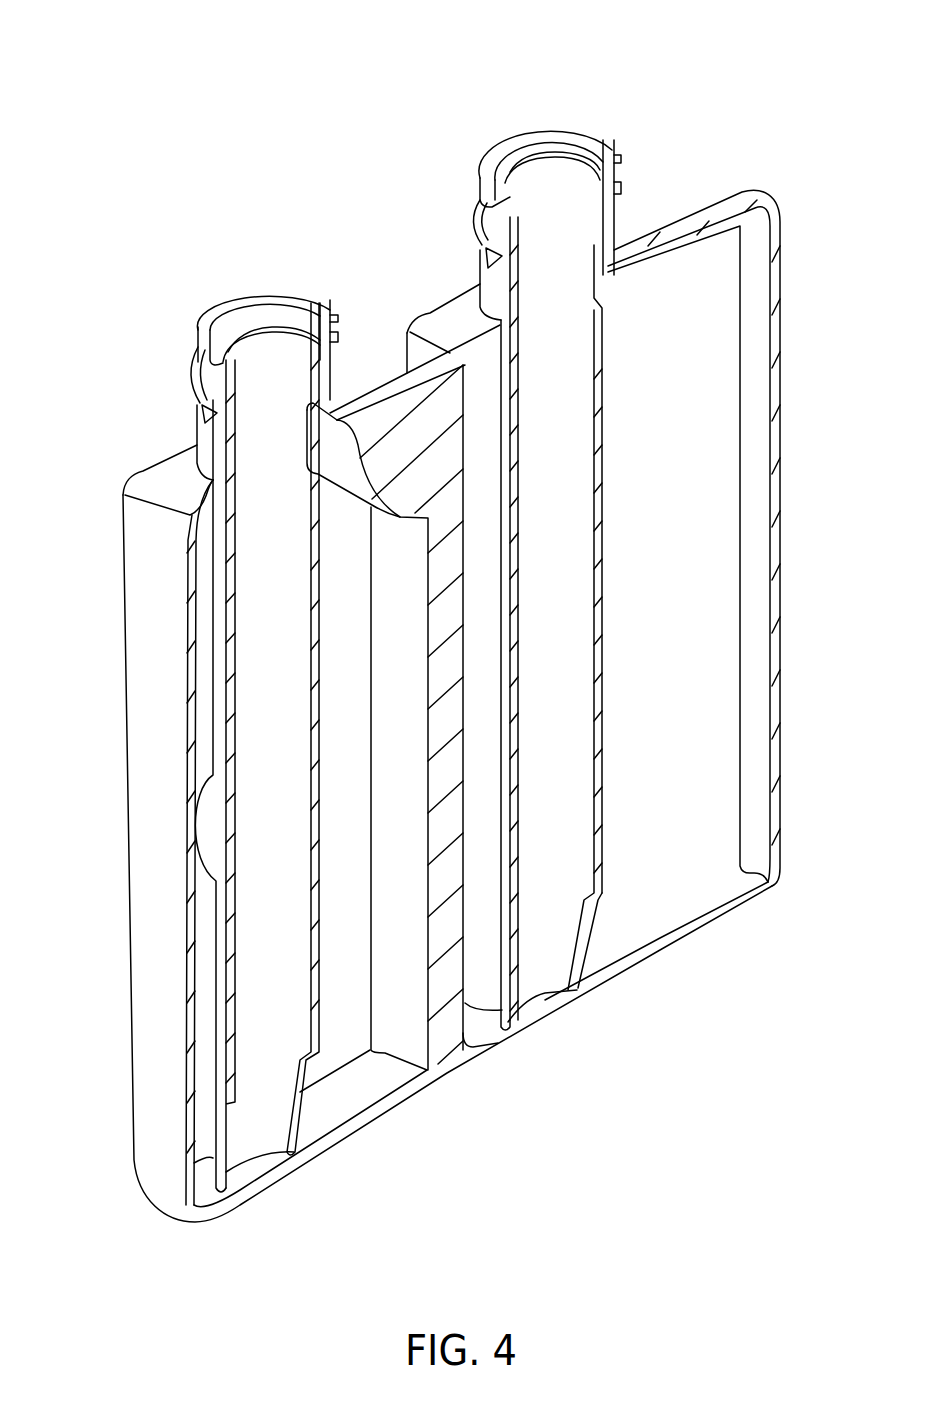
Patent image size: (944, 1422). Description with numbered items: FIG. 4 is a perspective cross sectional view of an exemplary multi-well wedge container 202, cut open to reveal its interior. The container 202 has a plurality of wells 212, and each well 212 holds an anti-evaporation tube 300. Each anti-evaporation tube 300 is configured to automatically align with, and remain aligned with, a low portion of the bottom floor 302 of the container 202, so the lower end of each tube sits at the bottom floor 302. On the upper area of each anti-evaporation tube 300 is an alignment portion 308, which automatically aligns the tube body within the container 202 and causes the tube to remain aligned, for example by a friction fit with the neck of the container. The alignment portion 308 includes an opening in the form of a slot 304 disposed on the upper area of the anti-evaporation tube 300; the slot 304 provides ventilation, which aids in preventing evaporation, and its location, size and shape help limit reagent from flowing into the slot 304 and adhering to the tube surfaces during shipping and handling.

The multi-well wedge container 202 is at (763, 104).
The well 212 is at (380, 1123).
The anti-evaporation tube 300 is at (267, 587).
The bottom floor 302 is at (258, 1175).
The slot 304 is at (337, 413).
The alignment portion 308 is at (274, 348).